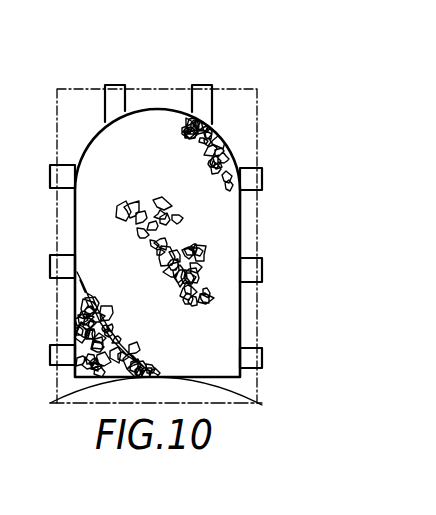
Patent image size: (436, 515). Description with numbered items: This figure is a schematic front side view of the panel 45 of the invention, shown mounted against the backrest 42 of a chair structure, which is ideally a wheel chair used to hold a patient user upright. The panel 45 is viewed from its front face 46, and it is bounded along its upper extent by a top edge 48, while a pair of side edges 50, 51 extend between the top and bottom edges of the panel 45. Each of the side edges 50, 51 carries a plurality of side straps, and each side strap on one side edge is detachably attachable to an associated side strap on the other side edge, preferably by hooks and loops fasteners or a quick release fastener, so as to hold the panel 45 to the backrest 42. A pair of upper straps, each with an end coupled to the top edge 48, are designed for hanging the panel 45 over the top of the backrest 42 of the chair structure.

The backrest 42 is at (78, 89).
The top edge 48 is at (145, 104).
The panel 45 is at (228, 112).
The front face 46 is at (222, 143).
The side edge 50 is at (77, 215).
The side edge 51 is at (240, 232).